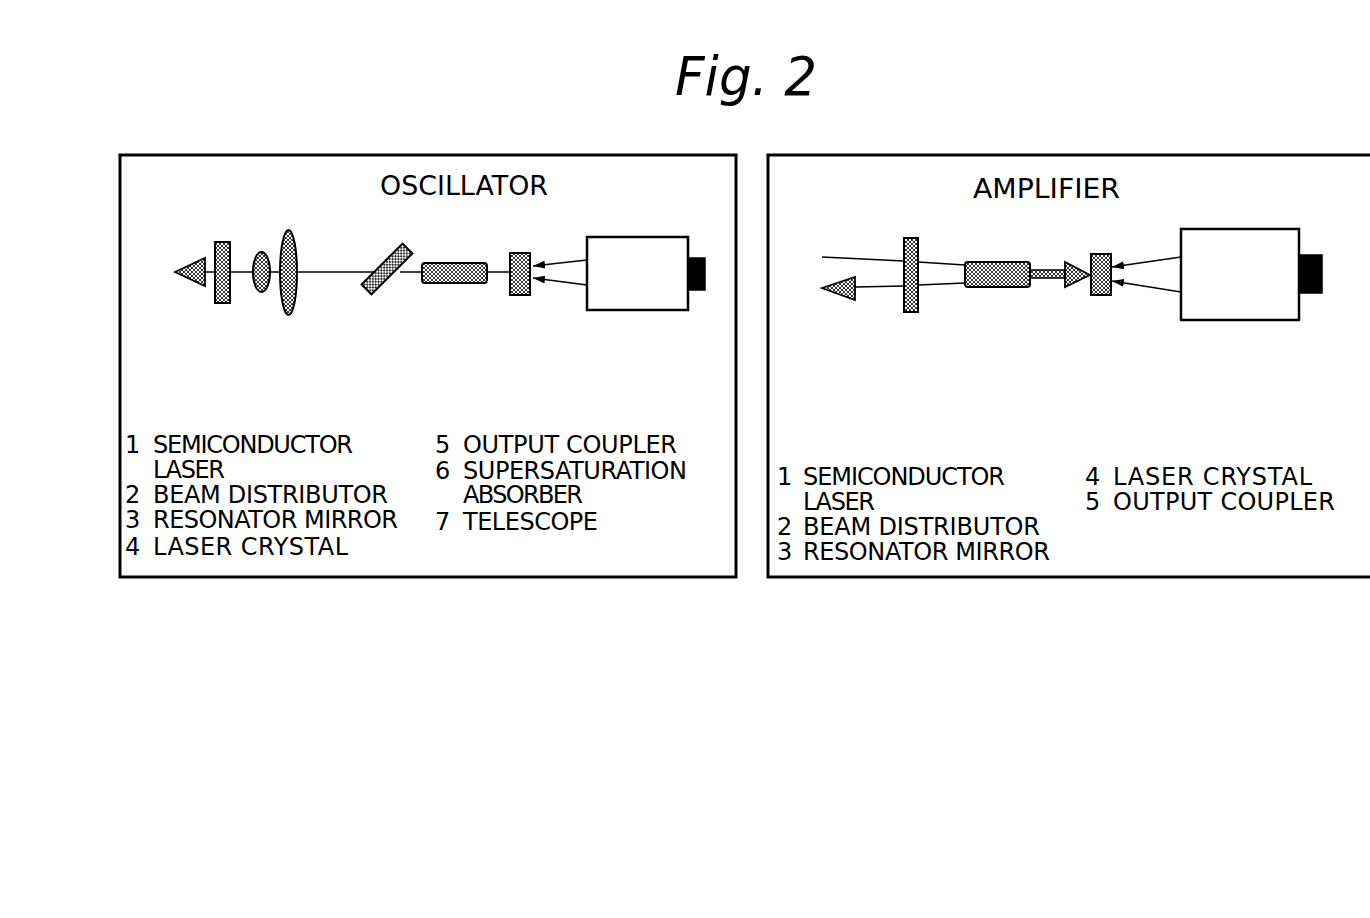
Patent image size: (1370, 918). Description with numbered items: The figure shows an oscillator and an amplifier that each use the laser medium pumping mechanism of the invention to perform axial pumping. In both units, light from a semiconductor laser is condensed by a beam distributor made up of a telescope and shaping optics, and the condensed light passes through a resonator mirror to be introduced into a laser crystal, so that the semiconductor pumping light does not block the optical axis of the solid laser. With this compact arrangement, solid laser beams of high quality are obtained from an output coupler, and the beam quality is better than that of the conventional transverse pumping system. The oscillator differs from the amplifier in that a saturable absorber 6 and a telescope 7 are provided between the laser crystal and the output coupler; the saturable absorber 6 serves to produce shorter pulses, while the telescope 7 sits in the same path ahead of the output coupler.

The saturable absorber 6 is at (362, 296).
The telescope 7 is at (308, 265).